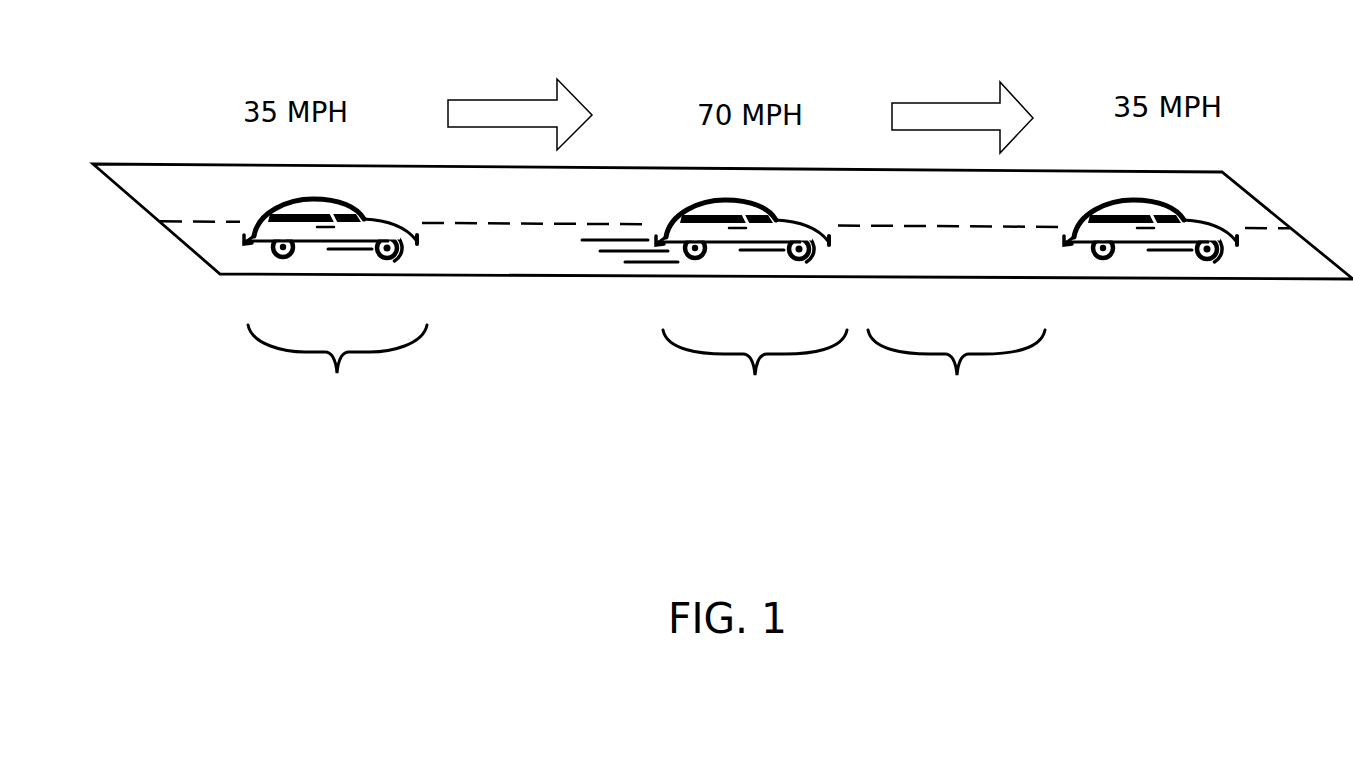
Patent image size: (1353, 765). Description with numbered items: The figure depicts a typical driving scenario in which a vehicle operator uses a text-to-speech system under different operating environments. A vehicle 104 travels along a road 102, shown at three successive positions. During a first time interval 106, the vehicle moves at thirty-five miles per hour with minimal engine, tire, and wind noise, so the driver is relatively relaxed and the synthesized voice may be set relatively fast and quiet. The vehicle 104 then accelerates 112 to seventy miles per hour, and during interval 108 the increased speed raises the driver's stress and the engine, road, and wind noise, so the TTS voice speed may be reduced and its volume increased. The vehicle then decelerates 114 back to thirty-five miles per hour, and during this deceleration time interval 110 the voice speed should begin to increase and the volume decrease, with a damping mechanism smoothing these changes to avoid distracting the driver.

The road 102 is at (137, 182).
The vehicle 104 is at (367, 213).
The first time interval 106 is at (337, 368).
The interval 108 is at (755, 374).
The deceleration time interval 110 is at (956, 374).
The accelerates 112 is at (570, 90).
The decelerates 114 is at (1020, 98).